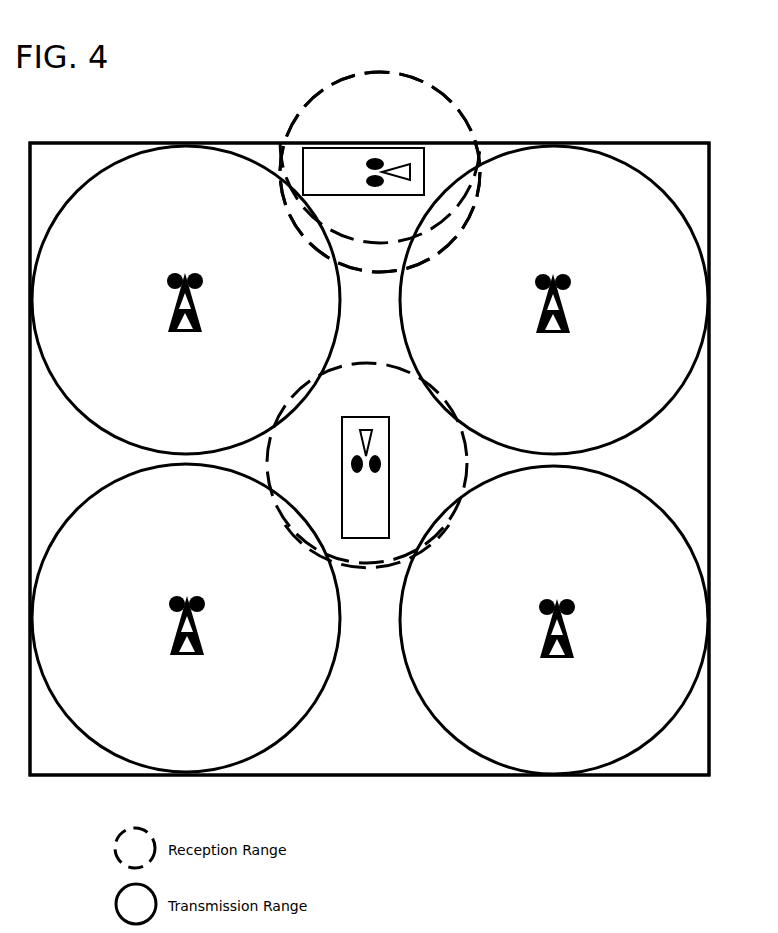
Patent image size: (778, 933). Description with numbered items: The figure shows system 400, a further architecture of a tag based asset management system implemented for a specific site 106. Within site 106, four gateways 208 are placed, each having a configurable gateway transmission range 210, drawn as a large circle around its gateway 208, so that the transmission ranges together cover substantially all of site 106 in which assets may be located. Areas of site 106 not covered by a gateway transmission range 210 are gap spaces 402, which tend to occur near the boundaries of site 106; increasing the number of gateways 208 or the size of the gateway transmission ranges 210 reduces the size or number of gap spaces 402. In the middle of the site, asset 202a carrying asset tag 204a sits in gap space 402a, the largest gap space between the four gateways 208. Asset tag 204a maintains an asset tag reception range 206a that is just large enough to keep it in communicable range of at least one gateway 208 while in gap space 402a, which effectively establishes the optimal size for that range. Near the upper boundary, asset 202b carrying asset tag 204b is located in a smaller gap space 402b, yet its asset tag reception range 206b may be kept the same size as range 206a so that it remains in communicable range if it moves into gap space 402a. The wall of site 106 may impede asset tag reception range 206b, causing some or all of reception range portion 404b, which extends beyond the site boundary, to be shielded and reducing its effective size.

The system 400 is at (126, 115).
The site 106 is at (645, 143).
The gap space 402 is at (96, 155).
The gateway transmission range 210 is at (89, 178).
The gateway 208 is at (196, 278).
The asset tag reception range 206b is at (447, 98).
The reception range portion 404b is at (325, 112).
The region 402b is at (295, 160).
The asset 202b is at (424, 157).
The asset tag 204b is at (390, 182).
The asset tag reception range 206a is at (355, 362).
The asset 202a is at (363, 417).
The asset tag 204a is at (370, 460).
The gap space 402a is at (328, 525).